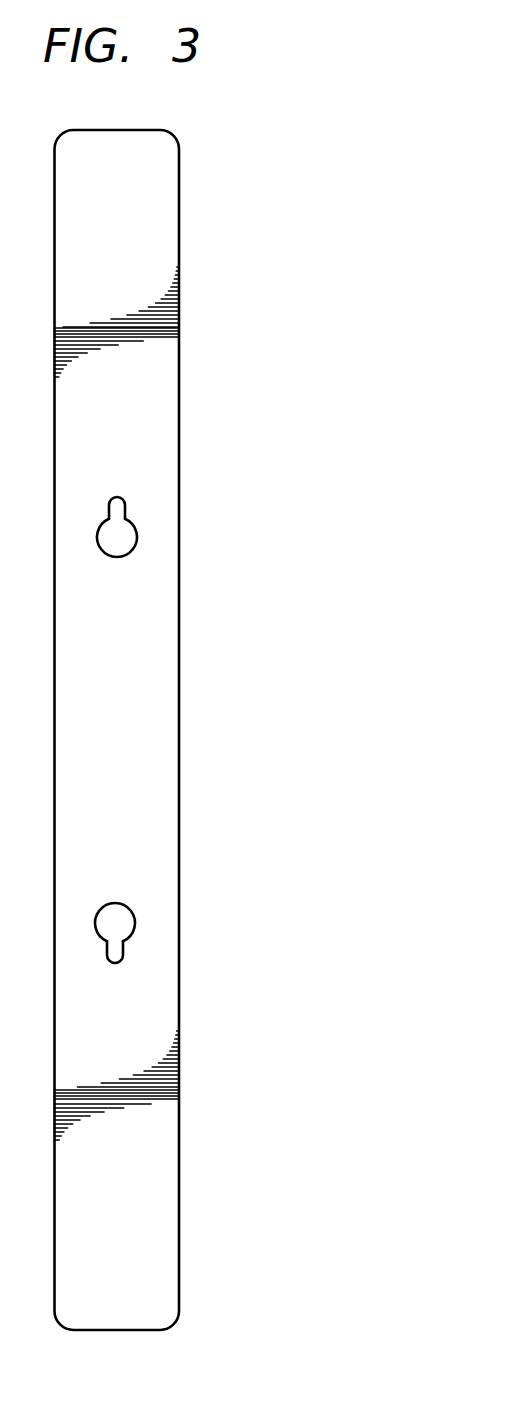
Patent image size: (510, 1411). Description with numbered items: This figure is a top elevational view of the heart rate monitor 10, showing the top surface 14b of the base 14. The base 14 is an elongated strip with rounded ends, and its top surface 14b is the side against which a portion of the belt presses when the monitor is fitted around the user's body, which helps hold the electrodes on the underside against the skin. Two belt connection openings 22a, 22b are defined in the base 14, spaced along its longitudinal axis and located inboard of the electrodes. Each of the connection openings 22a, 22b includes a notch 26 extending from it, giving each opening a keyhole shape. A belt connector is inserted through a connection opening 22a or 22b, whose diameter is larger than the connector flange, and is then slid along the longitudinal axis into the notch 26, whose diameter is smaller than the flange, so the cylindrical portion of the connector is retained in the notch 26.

The heart rate monitor 10 is at (310, 165).
The base 14 is at (152, 208).
The top surface 14b is at (157, 725).
The connection opening 22a is at (117, 536).
The connection opening 22b is at (115, 923).
The notch 26 is at (118, 503).